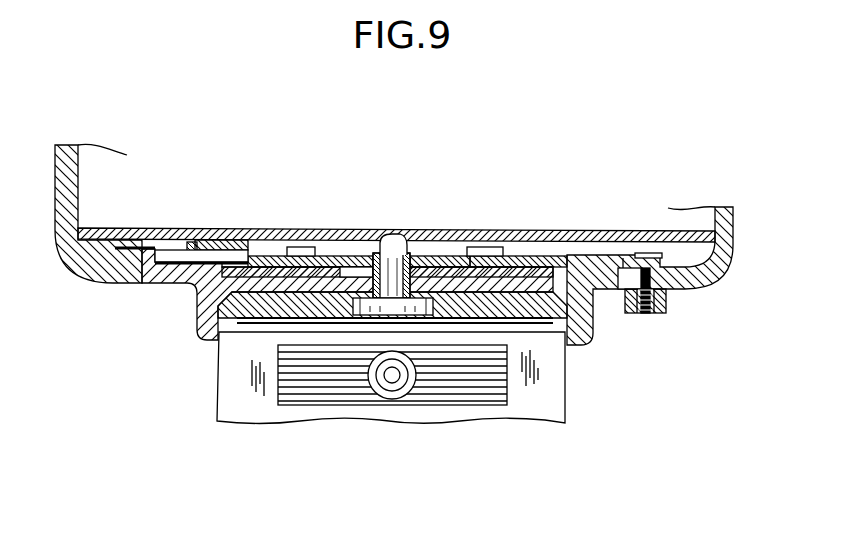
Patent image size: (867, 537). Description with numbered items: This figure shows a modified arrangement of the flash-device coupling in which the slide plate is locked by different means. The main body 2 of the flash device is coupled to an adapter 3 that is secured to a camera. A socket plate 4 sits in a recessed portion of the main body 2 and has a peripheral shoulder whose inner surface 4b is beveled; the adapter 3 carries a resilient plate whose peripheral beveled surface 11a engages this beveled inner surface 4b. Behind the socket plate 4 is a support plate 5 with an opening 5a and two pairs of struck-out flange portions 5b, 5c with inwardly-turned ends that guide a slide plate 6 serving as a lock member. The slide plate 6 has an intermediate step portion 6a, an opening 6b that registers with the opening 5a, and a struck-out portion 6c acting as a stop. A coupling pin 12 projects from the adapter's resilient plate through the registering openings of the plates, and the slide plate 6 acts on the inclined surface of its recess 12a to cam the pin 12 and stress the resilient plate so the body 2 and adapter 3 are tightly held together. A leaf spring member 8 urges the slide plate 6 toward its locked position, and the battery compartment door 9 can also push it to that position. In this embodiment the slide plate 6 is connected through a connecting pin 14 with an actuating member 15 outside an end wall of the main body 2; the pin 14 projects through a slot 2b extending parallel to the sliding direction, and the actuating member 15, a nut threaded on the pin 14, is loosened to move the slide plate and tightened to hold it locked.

The main body 2 is at (718, 262).
The slot 2b is at (626, 272).
The adapter 3 is at (550, 405).
The socket plate 4 is at (592, 340).
The inner surface 4b is at (237, 318).
The support plate 5 is at (565, 257).
The opening 5a is at (366, 264).
The struck-out flange portion 5b is at (300, 247).
The struck-out flange portion 5c is at (490, 247).
The slide plate 6 is at (495, 258).
The intermediate step portion 6a is at (247, 241).
The opening 6b is at (457, 262).
The struck-out portion 6c is at (192, 242).
The leaf spring member 8 is at (222, 250).
The hinged door 9 is at (70, 272).
The peripheral beveled surface 11a is at (262, 326).
The coupling pin 12 is at (423, 262).
The recess 12a is at (403, 247).
The connecting pin 14 is at (656, 293).
The actuating member 15 is at (622, 300).